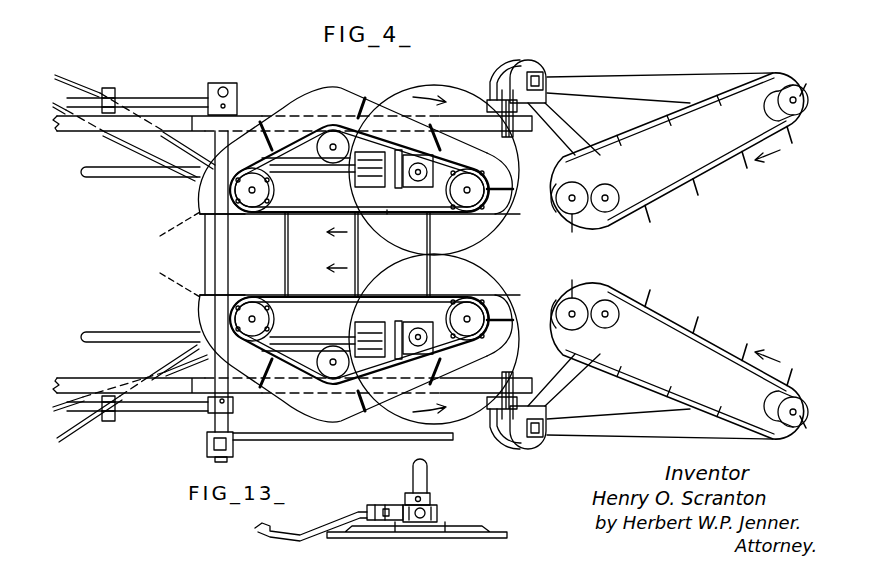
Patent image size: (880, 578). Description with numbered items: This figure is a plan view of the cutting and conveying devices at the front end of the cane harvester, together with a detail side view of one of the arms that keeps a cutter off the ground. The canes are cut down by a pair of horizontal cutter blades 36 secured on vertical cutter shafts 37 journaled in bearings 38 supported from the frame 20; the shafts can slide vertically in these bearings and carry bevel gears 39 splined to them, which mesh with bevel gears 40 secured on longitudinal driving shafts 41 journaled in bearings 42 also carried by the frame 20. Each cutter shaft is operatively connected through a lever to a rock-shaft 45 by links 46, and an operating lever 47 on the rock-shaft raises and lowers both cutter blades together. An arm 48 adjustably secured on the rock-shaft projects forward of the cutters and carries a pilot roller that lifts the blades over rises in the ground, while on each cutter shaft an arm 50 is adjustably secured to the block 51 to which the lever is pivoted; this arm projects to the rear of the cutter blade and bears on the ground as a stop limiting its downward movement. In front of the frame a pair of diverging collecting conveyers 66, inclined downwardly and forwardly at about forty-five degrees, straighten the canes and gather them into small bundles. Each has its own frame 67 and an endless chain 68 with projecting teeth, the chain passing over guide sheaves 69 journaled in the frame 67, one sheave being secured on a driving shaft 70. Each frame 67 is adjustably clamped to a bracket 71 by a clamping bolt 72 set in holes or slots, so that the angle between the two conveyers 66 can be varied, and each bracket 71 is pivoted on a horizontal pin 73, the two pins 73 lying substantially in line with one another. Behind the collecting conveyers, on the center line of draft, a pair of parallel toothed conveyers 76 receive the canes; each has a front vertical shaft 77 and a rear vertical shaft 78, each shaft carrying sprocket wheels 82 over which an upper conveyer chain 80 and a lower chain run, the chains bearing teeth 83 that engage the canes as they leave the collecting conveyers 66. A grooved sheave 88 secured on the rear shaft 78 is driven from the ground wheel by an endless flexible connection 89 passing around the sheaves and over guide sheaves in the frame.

In FIG. 4, the frame 20 is at (462, 116).
In FIG. 4, the cutter blade 36 is at (411, 92).
In FIG. 13, the cutter blade 36 is at (497, 536).
In FIG. 4, the cutter shaft 37 is at (446, 171).
In FIG. 13, the cutter shaft 37 is at (426, 484).
In FIG. 4, the bearing 38 is at (418, 330).
In FIG. 4, the bevel gear 39 is at (417, 367).
In FIG. 4, the bevel gear 40 is at (400, 183).
In FIG. 4, the driving shaft 41 is at (100, 173).
In FIG. 4, the bearing 42 is at (353, 188).
In FIG. 4, the rock-shaft 45 is at (215, 246).
In FIG. 4, the link 46 is at (113, 92).
In FIG. 4, the operating lever 47 is at (227, 83).
In FIG. 4, the arm 48 is at (318, 437).
In FIG. 4, the arm 50 is at (268, 208).
In FIG. 13, the arm 50 is at (271, 537).
In FIG. 13, the block 51 is at (402, 507).
In FIG. 4, the collecting conveyer 66 is at (665, 205).
In FIG. 4, the conveyer frame 67 is at (622, 90).
In FIG. 4, the endless chain 68 is at (731, 165).
In FIG. 4, the guide sheave 69 is at (779, 112).
In FIG. 4, the driving shaft 70 is at (578, 208).
In FIG. 4, the bracket 71 is at (492, 100).
In FIG. 4, the clamping bolt 72 is at (541, 72).
In FIG. 4, the horizontal pin 73 is at (517, 142).
In FIG. 4, the conveyer 76 is at (323, 220).
In FIG. 4, the front vertical shaft 77 is at (485, 214).
In FIG. 4, the rear vertical shaft 78 is at (252, 213).
In FIG. 4, the upper conveyer chain 80 is at (388, 212).
In FIG. 4, the sprocket wheel 82 is at (474, 181).
In FIG. 4, the tooth 83 is at (264, 126).
In FIG. 4, the grooved sheave 88 is at (193, 218).
In FIG. 4, the endless flexible connection 89 is at (117, 142).